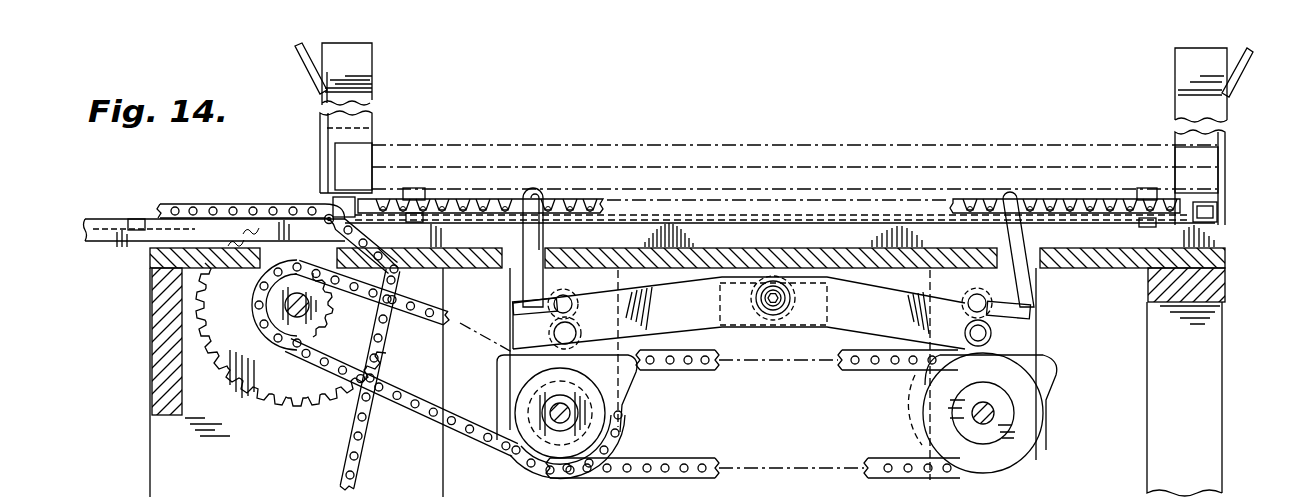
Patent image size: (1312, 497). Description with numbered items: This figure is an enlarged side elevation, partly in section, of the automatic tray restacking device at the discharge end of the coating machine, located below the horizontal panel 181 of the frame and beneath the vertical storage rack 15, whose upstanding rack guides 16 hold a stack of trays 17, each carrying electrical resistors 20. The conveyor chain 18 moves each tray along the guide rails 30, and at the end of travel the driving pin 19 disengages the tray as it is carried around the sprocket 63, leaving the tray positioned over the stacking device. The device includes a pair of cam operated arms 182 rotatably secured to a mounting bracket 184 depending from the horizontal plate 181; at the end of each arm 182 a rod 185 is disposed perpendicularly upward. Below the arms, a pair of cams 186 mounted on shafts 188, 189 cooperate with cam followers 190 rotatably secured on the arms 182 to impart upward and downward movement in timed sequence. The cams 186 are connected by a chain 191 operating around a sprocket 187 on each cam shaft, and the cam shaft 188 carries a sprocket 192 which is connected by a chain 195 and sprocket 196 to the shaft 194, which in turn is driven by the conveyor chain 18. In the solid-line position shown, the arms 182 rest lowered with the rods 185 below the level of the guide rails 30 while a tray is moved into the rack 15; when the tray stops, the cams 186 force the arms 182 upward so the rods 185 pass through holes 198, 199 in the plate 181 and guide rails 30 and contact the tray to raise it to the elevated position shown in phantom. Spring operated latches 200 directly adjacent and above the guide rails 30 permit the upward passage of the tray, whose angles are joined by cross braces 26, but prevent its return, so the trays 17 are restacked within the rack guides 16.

The vertical storage rack 15 is at (942, 93).
The upstanding rack guides 16 is at (365, 88).
The trays 17 is at (518, 200).
The conveyor chain 18 is at (245, 207).
The driving pin 19 is at (328, 213).
The electrical resistors 20 is at (992, 200).
The cross braces 26 is at (1208, 208).
The guide rails 30 is at (135, 218).
The sprocket 63 is at (287, 388).
The horizontal panel 181 is at (153, 258).
The cam operated arms 182 is at (697, 324).
The mounting bracket 184 is at (842, 270).
The rod 185 is at (545, 196).
The cams 186 is at (630, 370).
The sprocket 187 is at (508, 378).
The cam shaft 188 is at (585, 398).
The cam shaft 189 is at (1003, 413).
The cam followers 190 is at (552, 335).
The chain 191 is at (862, 372).
The sprocket 192 is at (598, 420).
The shaft 194 is at (262, 337).
The chain 195 is at (473, 443).
The sprocket 196 is at (331, 316).
The holes 198 is at (510, 248).
The holes 199 is at (545, 232).
The spring operated latches 200 is at (415, 189).